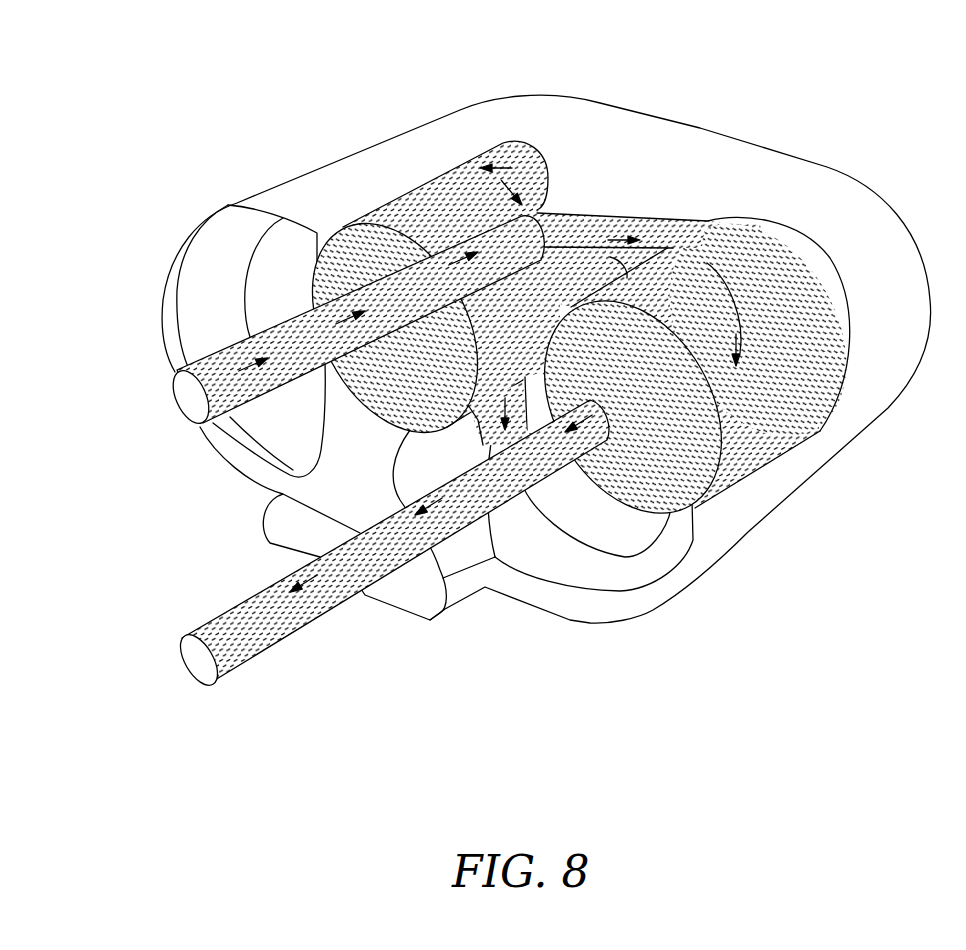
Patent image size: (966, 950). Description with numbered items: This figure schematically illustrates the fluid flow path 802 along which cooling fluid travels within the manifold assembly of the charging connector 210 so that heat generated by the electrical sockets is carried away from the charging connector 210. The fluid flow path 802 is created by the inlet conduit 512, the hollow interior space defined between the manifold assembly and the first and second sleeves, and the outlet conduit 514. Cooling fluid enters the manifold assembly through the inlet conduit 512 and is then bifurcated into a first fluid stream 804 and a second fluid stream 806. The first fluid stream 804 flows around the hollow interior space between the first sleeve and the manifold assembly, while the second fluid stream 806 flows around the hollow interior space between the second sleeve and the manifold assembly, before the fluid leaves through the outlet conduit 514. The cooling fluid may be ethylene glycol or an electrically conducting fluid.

The charging connector 210 is at (230, 120).
The fluid flow path 802 is at (232, 367).
The first fluid stream 804 is at (547, 172).
The second fluid stream 806 is at (613, 232).
The inlet conduit 512 is at (185, 402).
The outlet conduit 514 is at (197, 663).